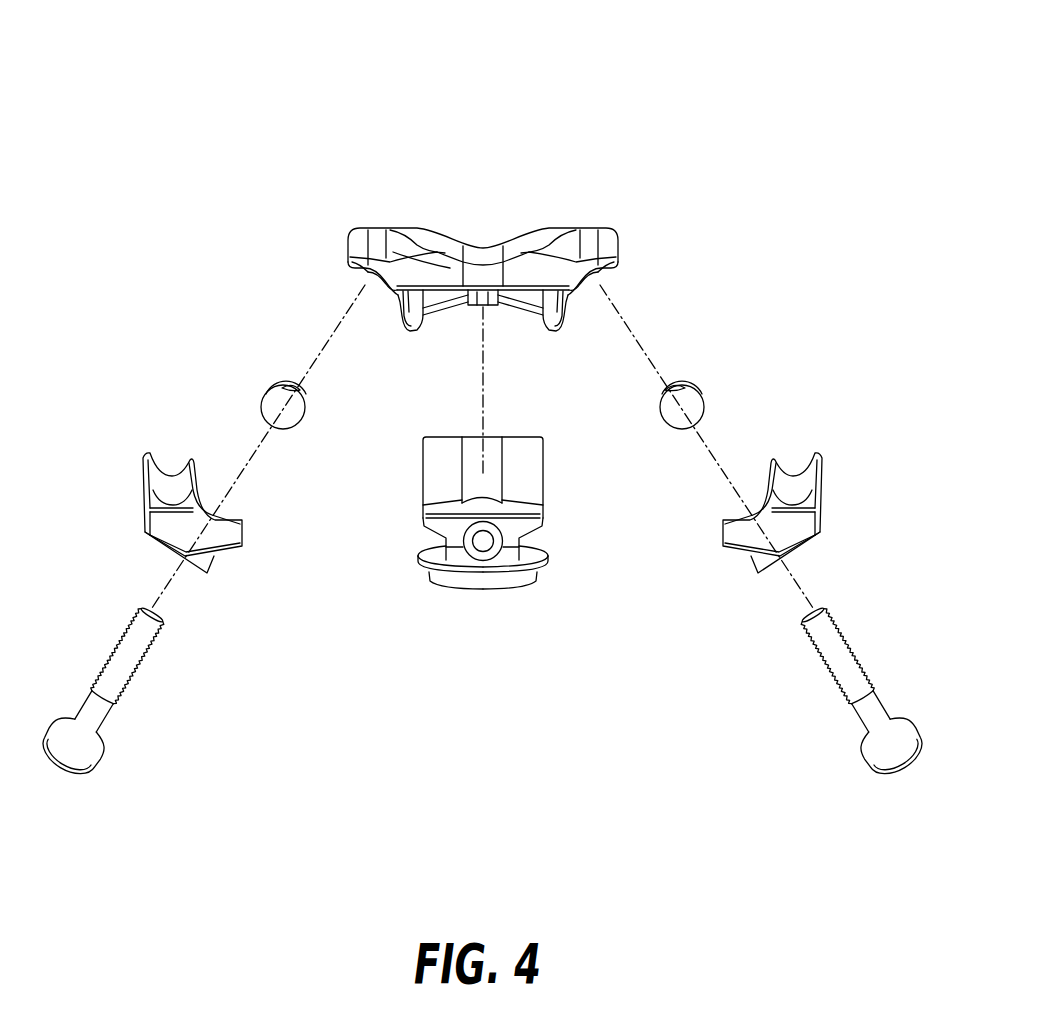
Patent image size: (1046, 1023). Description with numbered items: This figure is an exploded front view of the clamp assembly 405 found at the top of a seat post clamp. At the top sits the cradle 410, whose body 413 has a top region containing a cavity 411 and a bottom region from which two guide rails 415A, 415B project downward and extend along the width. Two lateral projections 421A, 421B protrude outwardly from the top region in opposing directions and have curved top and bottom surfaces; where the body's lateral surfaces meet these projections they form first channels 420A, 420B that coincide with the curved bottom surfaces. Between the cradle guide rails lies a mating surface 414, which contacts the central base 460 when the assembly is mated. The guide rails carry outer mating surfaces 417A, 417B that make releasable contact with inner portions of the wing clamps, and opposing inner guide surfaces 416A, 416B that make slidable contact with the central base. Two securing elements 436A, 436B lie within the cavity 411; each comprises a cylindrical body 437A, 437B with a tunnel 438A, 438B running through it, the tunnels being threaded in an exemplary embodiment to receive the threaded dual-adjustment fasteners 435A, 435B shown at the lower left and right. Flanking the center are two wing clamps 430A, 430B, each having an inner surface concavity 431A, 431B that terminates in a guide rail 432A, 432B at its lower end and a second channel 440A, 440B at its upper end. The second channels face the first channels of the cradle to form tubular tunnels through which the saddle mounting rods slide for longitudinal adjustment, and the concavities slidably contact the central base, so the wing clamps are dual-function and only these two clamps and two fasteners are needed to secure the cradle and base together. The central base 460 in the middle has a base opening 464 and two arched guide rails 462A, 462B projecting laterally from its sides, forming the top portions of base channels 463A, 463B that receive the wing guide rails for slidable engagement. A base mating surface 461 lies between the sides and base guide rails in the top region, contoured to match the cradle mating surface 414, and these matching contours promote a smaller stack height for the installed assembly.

The clamp assembly 405 is at (848, 44).
The cradle 410 is at (484, 192).
The cavity 411 is at (490, 246).
The body 413 is at (407, 252).
The mating surface 414 is at (476, 312).
The guide rail 415A is at (420, 336).
The guide rail 415B is at (546, 336).
The inner guide surface 416A is at (427, 332).
The inner guide surface 416B is at (543, 332).
The outer mating surface 417A is at (385, 320).
The outer mating surface 417B is at (583, 320).
The first channel 420A is at (370, 286).
The first channel 420B is at (597, 286).
The lateral projection 421A is at (348, 246).
The lateral projection 421B is at (618, 246).
The wing clamp 430A is at (124, 437).
The wing clamp 430B is at (838, 436).
The inner surface concavity 431A is at (222, 520).
The inner surface concavity 431B is at (743, 520).
The guide rail 432A is at (244, 550).
The guide rail 432B is at (722, 550).
The fastener 435A is at (80, 746).
The fastener 435B is at (886, 746).
The securing element 436A is at (258, 375).
The securing element 436B is at (710, 375).
The cylindrical body 437A is at (268, 389).
The cylindrical body 437B is at (701, 389).
The tunnel 438A is at (306, 386).
The tunnel 438B is at (662, 386).
The second channel 440A is at (168, 472).
The second channel 440B is at (798, 472).
The central base 460 is at (484, 625).
The base mating surface 461 is at (491, 445).
The arched guide rail 462A is at (424, 522).
The arched guide rail 462B is at (541, 522).
The base channel 463A is at (428, 547).
The base channel 463B is at (537, 547).
The base opening 464 is at (488, 552).